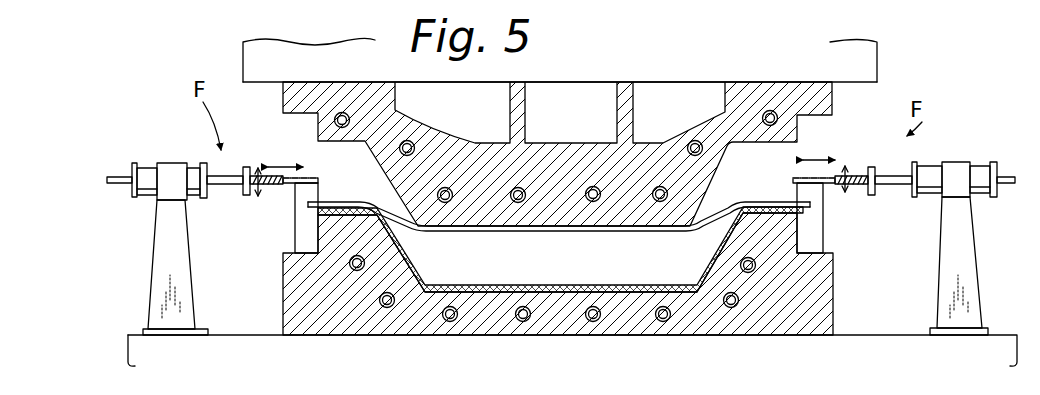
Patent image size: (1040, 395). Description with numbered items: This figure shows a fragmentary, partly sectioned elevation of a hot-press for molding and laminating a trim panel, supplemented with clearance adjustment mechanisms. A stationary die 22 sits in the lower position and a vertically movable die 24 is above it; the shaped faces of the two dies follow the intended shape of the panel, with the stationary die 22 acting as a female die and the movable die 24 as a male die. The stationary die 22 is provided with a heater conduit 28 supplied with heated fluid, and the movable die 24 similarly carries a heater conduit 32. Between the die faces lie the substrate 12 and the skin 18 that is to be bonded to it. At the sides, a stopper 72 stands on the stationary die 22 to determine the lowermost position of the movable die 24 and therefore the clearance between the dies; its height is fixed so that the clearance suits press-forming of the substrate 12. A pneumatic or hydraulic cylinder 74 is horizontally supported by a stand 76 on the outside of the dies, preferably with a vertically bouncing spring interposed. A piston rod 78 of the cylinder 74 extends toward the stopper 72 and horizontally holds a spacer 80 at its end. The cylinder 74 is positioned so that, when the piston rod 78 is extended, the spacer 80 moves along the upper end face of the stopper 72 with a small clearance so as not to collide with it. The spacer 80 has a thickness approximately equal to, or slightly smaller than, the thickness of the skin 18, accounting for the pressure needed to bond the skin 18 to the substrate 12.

The substrate 12 is at (514, 284).
The skin 18 is at (578, 231).
The stationary die 22 is at (770, 322).
The movable die 24 is at (748, 92).
The heater conduit 28 is at (455, 323).
The heater conduit 32 is at (774, 111).
The stopper 72 is at (300, 232).
The pneumatic or hydraulic cylinder 74 is at (192, 168).
The stand 76 is at (168, 237).
The piston rod 78 is at (233, 186).
The spacer 80 is at (260, 173).